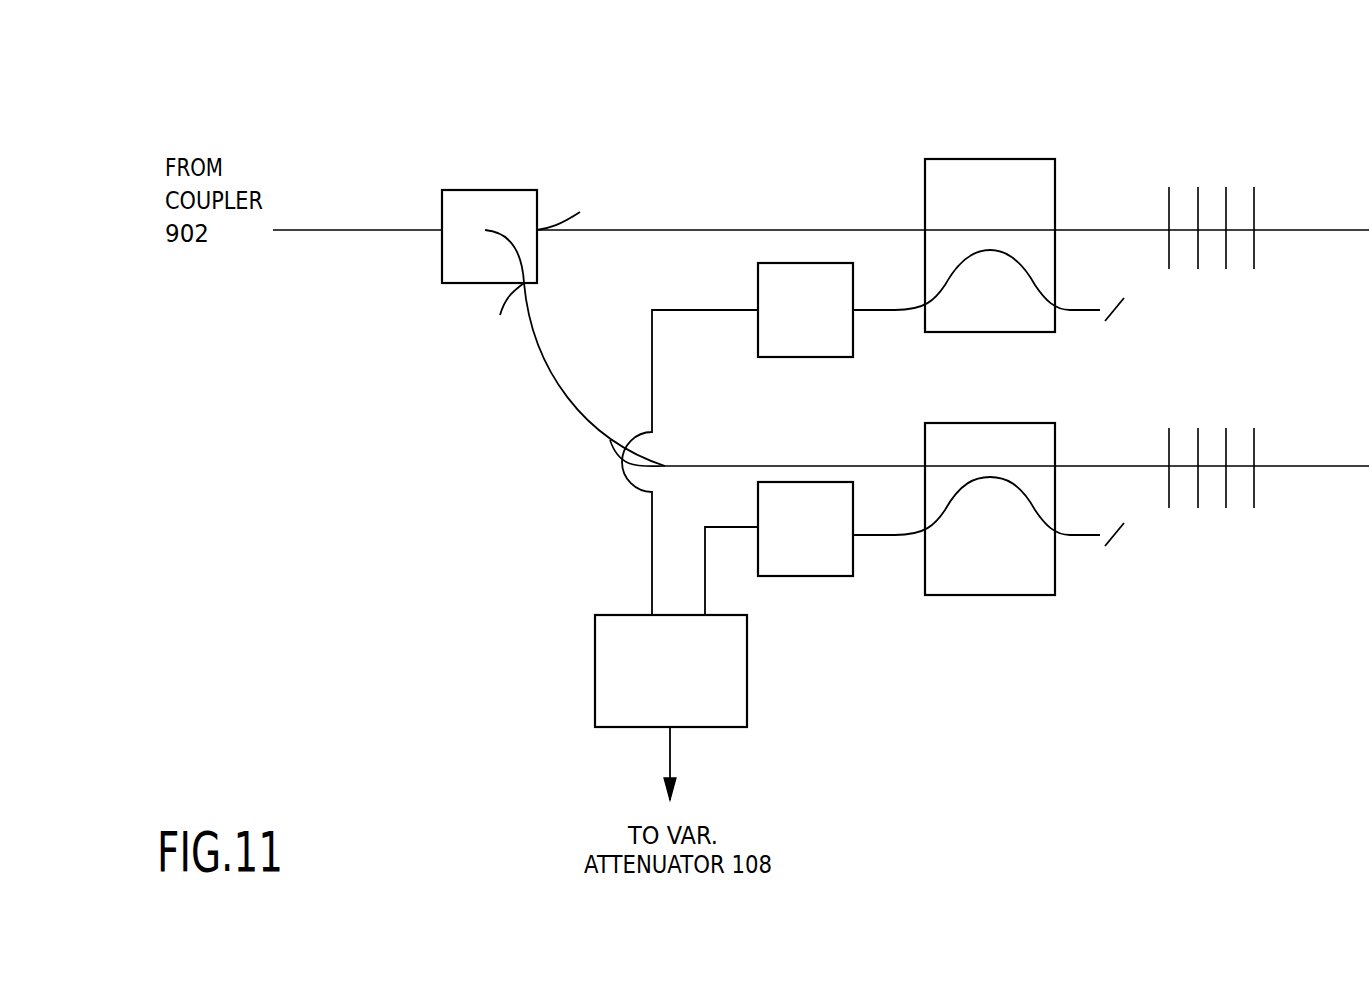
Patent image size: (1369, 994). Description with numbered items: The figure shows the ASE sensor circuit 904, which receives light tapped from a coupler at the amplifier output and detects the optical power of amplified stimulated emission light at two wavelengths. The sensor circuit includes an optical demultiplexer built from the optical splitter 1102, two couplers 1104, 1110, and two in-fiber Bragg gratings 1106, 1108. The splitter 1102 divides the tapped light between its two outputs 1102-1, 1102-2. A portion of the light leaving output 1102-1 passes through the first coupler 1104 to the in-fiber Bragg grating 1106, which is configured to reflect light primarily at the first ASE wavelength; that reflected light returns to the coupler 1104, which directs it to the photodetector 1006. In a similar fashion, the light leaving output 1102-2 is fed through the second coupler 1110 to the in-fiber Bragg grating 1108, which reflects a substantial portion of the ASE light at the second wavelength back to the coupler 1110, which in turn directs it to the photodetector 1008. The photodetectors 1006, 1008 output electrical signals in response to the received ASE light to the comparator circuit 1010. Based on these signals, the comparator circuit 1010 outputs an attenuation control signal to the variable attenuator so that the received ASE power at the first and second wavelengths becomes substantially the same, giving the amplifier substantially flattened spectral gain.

The optical splitter 1102 is at (478, 190).
The first output of splitter 1102-1 is at (540, 229).
The second output of splitter 1102-2 is at (524, 283).
The first coupler 1104 is at (978, 159).
The in-fiber Bragg grating 1106 is at (1198, 187).
The in-fiber Bragg grating 1108 is at (1226, 428).
The second coupler 1110 is at (1000, 595).
The photodetector 1006 is at (758, 275).
The photodetector 1008 is at (810, 576).
The comparator circuit 1010 is at (595, 670).
The ASE sensor circuit 904 is at (1204, 787).